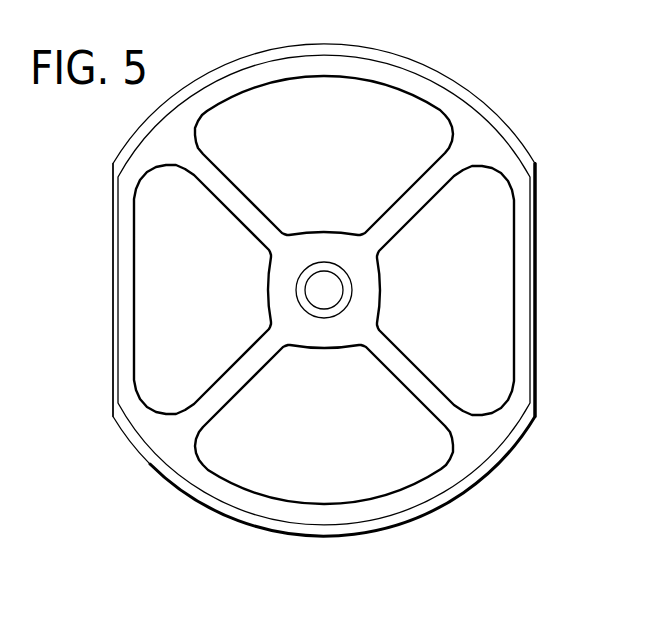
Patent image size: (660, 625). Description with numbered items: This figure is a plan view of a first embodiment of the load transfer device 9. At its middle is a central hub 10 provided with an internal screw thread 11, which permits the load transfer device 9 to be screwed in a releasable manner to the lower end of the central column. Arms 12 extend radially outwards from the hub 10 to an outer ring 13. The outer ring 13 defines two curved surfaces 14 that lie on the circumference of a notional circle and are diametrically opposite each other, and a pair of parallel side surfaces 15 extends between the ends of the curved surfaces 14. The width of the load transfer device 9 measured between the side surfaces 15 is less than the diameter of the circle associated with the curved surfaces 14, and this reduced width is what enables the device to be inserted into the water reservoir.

The load transfer device 9 is at (332, 295).
The central hub 10 is at (383, 257).
The internal screw thread 11 is at (332, 276).
The arms 12 is at (240, 190).
The outer ring 13 is at (430, 483).
The curved surfaces 14 is at (472, 97).
The side surfaces 15 is at (113, 291).